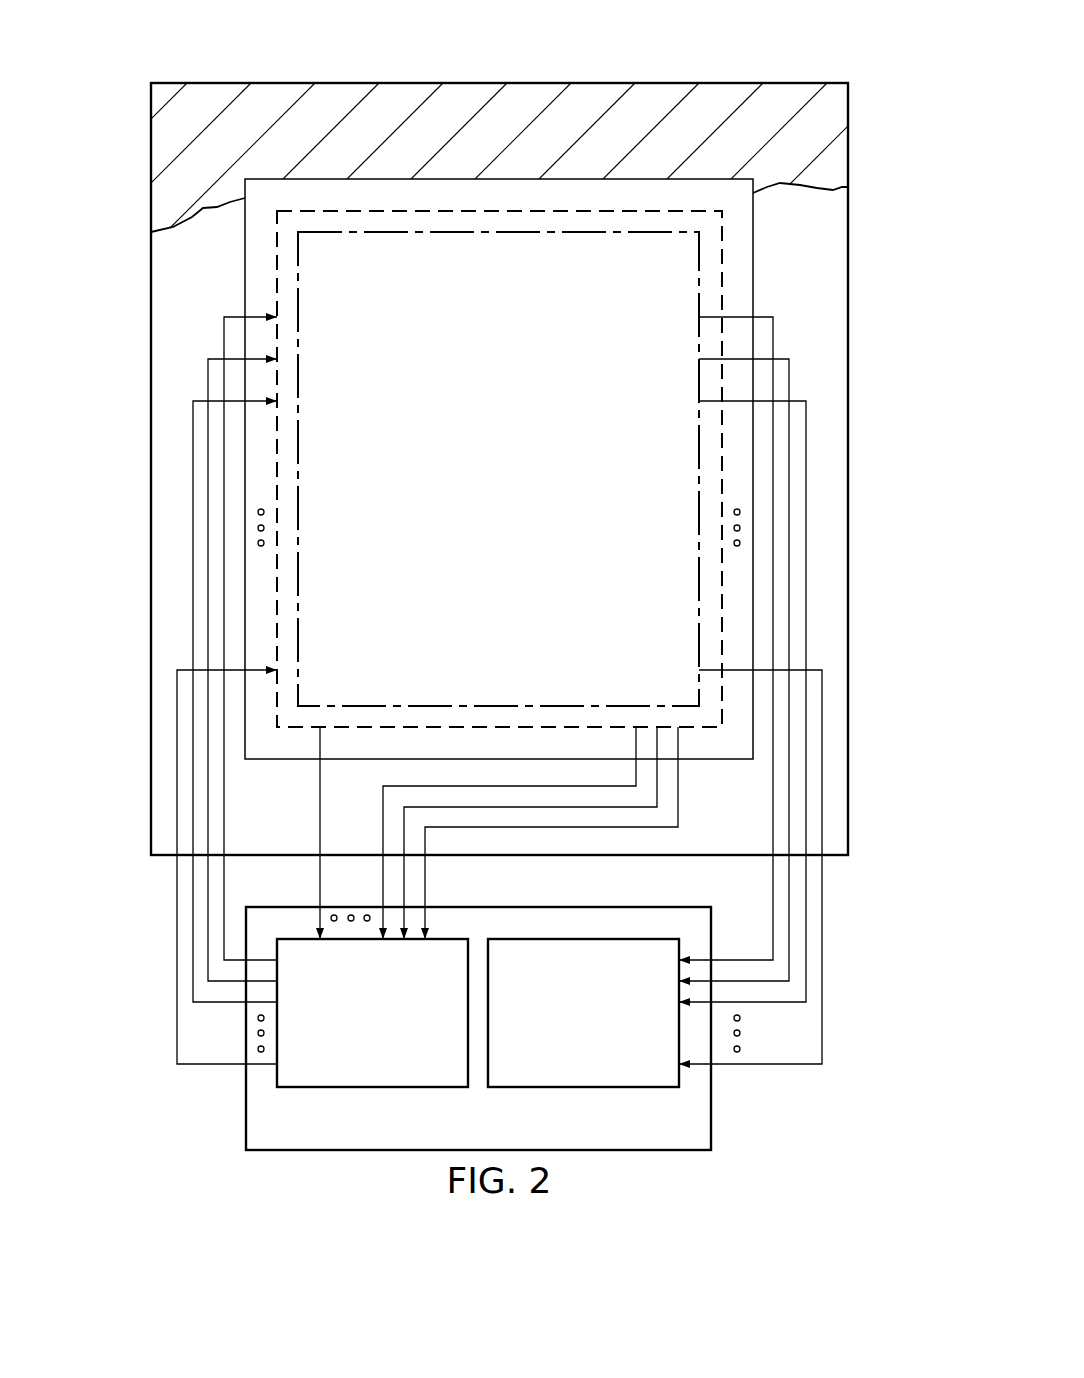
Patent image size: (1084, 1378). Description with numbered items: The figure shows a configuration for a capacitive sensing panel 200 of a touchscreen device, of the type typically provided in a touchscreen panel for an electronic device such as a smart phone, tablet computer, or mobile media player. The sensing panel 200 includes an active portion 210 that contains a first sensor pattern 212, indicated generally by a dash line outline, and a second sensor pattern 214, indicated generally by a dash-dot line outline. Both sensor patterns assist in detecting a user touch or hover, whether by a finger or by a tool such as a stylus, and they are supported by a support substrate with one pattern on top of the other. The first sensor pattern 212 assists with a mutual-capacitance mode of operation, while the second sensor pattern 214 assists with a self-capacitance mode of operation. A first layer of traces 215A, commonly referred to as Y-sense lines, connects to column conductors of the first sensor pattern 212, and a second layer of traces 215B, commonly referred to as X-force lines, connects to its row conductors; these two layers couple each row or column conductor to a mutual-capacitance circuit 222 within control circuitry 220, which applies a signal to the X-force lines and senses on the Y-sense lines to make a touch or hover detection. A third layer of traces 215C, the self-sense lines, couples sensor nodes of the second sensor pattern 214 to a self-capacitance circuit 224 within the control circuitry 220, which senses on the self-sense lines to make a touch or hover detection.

The capacitive sensing panel 200 is at (357, 62).
The active portion 210 is at (755, 234).
The first sensor pattern 212 is at (277, 272).
The second sensor pattern 214 is at (298, 247).
The first layer of traces 215A is at (618, 838).
The second layer of traces 215B is at (178, 485).
The third layer of traces 215C is at (818, 485).
The control circuitry 220 is at (651, 1153).
The mutual-capacitance circuit 222 is at (352, 1038).
The self-capacitance circuit 224 is at (563, 1038).